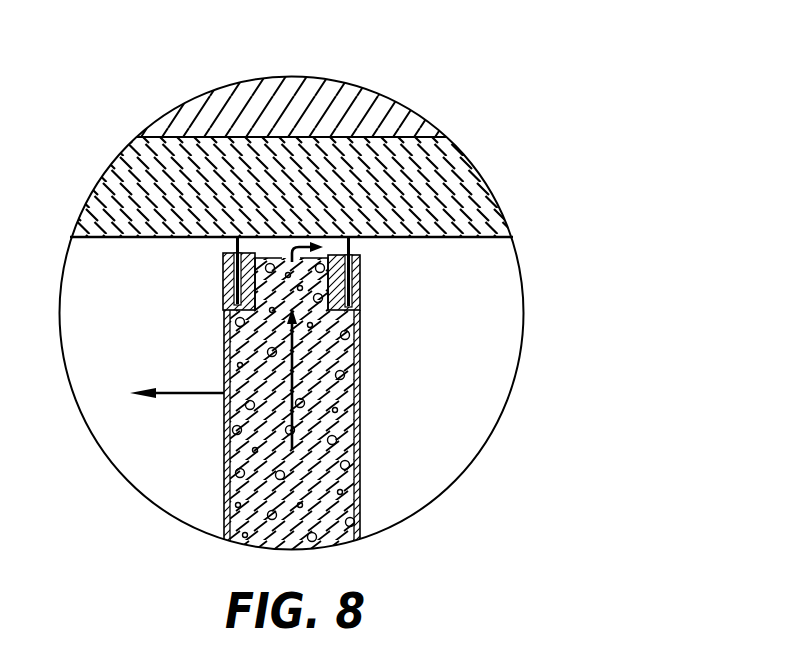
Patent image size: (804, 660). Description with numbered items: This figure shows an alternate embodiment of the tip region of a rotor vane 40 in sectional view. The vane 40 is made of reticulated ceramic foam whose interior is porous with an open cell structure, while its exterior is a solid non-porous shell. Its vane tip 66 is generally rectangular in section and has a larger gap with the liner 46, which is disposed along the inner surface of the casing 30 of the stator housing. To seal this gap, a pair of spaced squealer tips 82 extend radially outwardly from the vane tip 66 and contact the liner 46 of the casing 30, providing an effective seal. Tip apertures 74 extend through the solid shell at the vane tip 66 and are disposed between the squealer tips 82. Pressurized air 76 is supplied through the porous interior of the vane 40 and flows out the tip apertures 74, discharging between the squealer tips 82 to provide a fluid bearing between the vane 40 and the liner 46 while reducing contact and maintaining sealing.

The casing 30 is at (378, 93).
The liner 46 is at (478, 170).
The vane 40 is at (360, 393).
The vane tip 66 is at (232, 247).
The squealer tips 82 is at (232, 290).
The tip apertures 74 is at (287, 261).
The pressurized air 76 is at (293, 366).